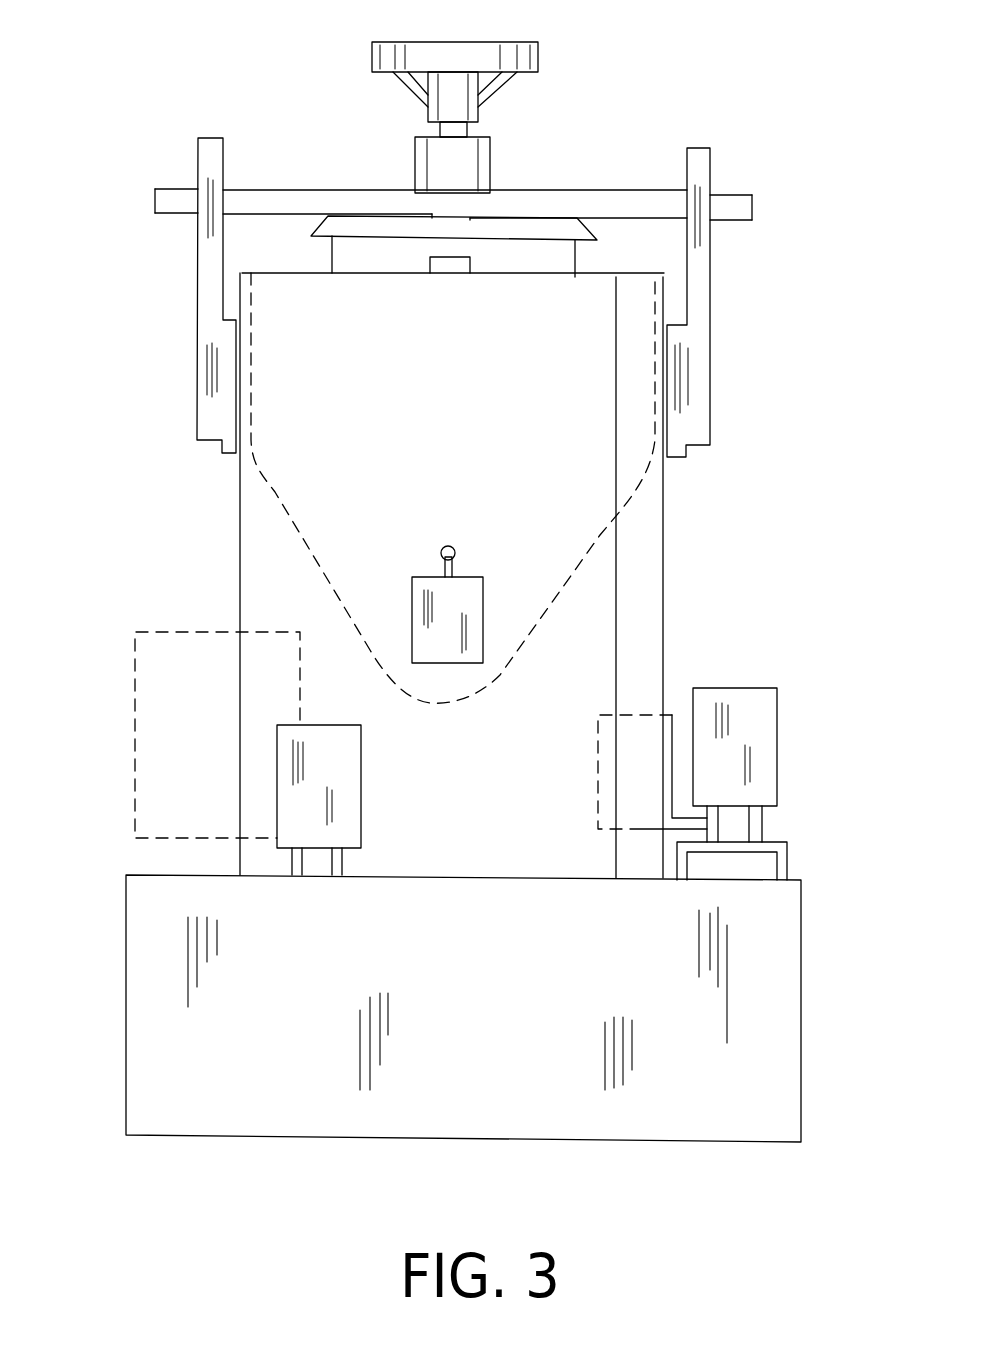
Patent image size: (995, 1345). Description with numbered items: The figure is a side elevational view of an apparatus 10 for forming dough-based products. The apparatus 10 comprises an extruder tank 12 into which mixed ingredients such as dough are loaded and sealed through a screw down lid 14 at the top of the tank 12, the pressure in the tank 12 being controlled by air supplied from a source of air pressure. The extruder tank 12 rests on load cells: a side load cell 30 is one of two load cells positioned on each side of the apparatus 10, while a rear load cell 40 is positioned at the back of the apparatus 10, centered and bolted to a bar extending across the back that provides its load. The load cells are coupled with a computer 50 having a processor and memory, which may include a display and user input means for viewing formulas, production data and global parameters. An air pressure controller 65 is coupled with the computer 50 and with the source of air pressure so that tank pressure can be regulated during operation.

The apparatus 10 is at (717, 558).
The extruder tank 12 is at (567, 518).
The screw down lid 14 is at (555, 230).
The load cell 30 is at (301, 818).
The rear load cell 40 is at (758, 717).
The computer 50 is at (198, 646).
The air pressure controller 65 is at (435, 652).